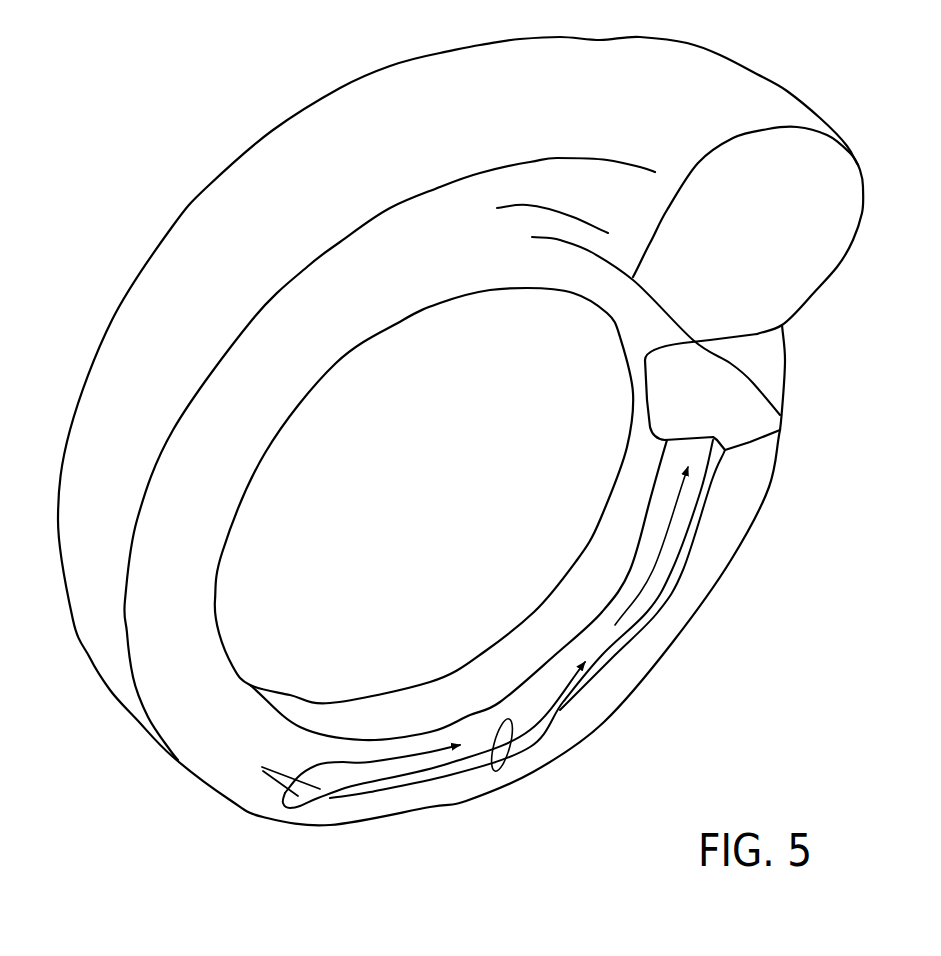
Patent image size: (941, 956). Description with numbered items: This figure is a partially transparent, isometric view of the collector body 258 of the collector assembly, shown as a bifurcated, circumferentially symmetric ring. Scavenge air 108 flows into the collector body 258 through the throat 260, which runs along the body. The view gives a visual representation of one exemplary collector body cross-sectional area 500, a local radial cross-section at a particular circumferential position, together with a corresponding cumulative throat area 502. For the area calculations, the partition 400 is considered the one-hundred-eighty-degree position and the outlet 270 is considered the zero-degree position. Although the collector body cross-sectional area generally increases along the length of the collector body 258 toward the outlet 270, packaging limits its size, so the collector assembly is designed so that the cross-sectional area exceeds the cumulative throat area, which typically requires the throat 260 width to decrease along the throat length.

The collector body 258 is at (173, 226).
The outlet 270 is at (852, 175).
The collector body cross-sectional area 500 is at (746, 389).
The cumulative throat area 502 is at (591, 689).
The throat 260 is at (424, 782).
The scavenge air 108 is at (302, 800).
The partition 400 is at (232, 804).